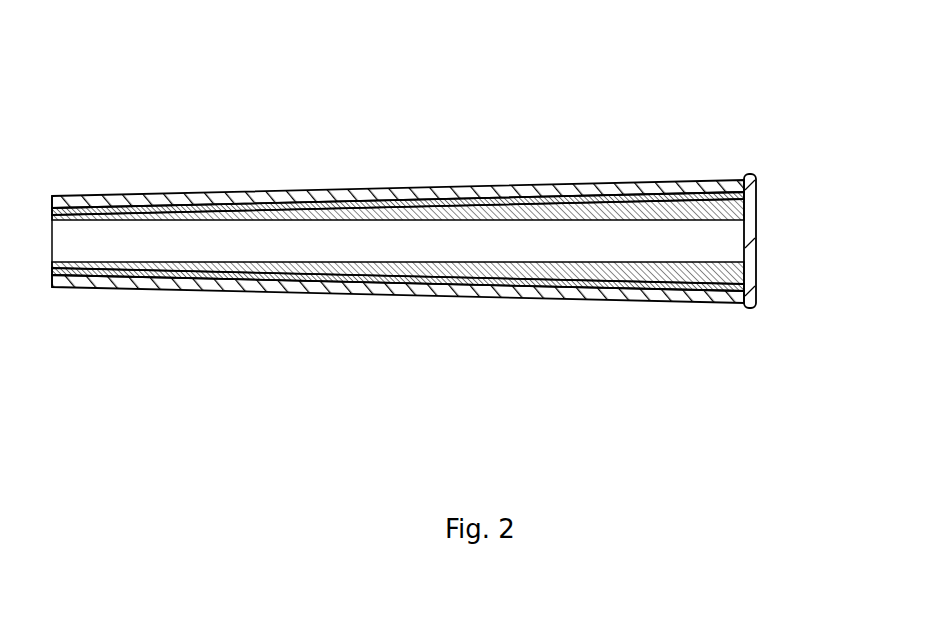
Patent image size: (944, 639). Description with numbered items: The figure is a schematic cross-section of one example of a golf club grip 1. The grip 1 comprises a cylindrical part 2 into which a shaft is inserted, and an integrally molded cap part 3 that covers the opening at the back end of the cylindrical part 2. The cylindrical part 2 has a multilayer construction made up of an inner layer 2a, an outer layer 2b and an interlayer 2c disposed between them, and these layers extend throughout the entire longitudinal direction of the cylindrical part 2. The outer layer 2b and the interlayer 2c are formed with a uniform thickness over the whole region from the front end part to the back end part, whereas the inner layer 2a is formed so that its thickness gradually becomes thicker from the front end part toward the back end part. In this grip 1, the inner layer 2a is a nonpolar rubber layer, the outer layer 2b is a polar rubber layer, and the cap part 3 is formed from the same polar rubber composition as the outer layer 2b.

The grip 1 is at (461, 222).
The cylindrical part 2 is at (398, 306).
The inner layer 2a is at (472, 267).
The outer layer 2b is at (498, 278).
The interlayer 2c is at (529, 288).
The cap part 3 is at (753, 248).